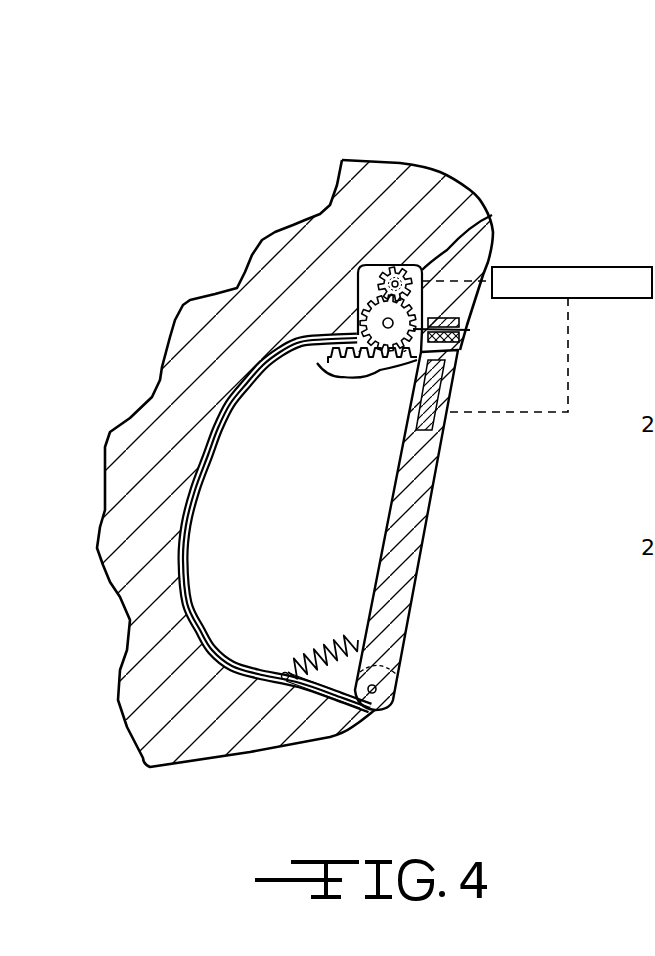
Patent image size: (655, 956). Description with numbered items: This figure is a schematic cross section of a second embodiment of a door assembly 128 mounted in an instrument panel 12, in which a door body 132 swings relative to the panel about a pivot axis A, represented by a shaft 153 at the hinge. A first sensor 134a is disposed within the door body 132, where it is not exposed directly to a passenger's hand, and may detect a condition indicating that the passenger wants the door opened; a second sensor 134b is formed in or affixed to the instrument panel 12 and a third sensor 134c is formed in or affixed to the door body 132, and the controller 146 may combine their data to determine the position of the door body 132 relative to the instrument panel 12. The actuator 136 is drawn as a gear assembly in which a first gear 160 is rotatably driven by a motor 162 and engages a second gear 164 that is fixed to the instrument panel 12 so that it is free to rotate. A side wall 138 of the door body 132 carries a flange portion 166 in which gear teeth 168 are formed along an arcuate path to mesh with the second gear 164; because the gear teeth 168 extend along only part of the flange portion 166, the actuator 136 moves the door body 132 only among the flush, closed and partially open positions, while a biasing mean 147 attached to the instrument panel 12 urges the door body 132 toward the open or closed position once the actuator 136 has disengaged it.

The instrument panel 12 is at (377, 160).
The door assembly 128 is at (536, 153).
The first gear 160 is at (385, 268).
The actuator 136 is at (358, 308).
The motor 162 is at (492, 215).
The controller 146 is at (563, 267).
The second gear 164 is at (357, 337).
The flange portion 166 is at (315, 365).
The gear teeth 168 is at (297, 390).
The third sensor 134c is at (459, 322).
The shaft 153 is at (470, 330).
The second sensor 134b is at (443, 343).
The first sensor 134a is at (445, 395).
The door body 132 is at (450, 520).
The pivot axis A is at (376, 689).
The side wall 138 is at (208, 604).
The biasing mean 147 is at (290, 680).